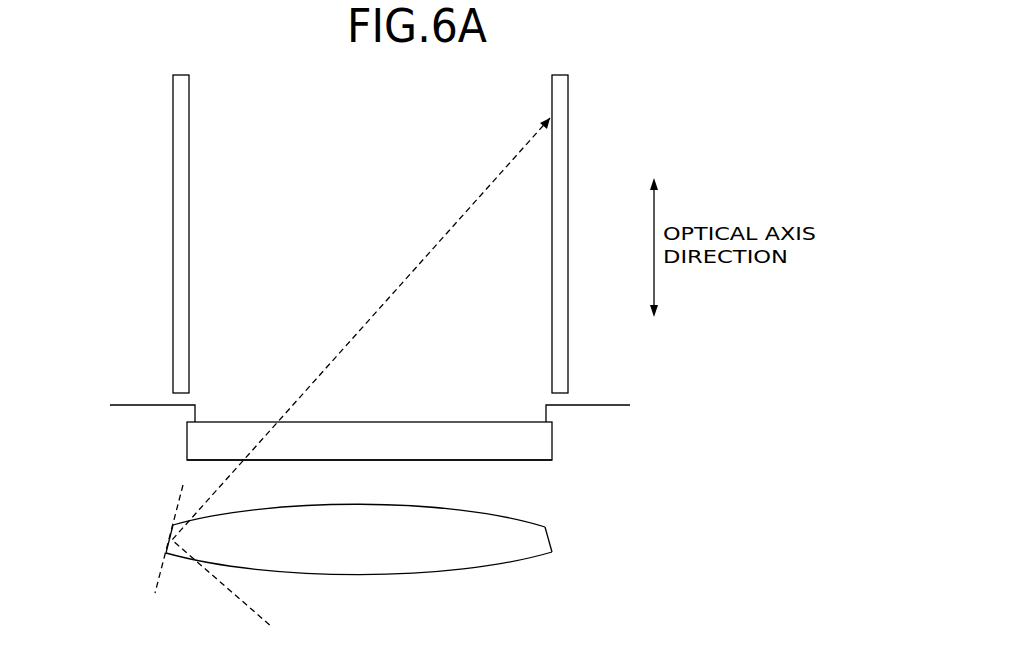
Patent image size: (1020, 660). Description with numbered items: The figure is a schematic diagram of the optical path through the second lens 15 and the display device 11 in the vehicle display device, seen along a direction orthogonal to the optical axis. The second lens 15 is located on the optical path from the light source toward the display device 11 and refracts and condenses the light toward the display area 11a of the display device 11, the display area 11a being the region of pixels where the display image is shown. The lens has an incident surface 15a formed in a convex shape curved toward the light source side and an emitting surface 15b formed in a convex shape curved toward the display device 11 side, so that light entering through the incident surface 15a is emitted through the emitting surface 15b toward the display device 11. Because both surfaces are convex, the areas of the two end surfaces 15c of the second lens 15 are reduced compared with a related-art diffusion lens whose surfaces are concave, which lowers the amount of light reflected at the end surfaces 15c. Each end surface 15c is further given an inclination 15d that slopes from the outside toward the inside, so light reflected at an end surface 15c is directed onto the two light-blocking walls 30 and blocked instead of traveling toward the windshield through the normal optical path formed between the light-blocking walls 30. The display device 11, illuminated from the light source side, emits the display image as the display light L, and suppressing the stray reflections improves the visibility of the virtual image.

The light-blocking wall 30 is at (166, 130).
The display device 11 is at (562, 433).
The display area 11a is at (525, 460).
The second lens 15 is at (364, 565).
The incident surface 15a is at (501, 568).
The emitting surface 15b is at (508, 517).
The end surface 15c is at (170, 532).
The inclination 15d is at (160, 580).
The display light L is at (386, 299).